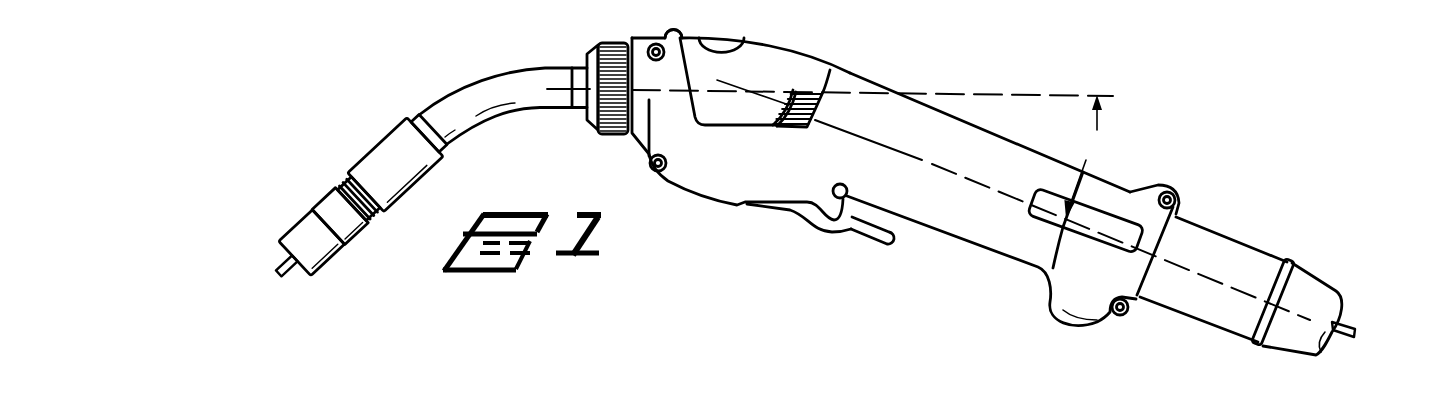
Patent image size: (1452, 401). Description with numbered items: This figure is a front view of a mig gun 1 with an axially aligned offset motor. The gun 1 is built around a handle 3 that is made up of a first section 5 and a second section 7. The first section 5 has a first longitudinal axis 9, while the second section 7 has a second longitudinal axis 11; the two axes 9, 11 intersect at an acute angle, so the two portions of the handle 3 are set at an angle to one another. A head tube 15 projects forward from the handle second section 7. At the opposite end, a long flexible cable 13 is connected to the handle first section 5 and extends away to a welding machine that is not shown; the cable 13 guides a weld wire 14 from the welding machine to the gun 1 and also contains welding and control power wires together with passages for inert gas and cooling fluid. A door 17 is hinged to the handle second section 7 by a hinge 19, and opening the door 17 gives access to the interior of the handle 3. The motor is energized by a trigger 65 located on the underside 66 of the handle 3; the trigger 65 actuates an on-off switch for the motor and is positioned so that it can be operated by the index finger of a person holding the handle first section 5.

The gun 1 is at (907, 40).
The handle 3 is at (865, 60).
The first section 5 is at (967, 133).
The second section 7 is at (642, 57).
The first longitudinal axis 9 is at (1195, 266).
The second longitudinal axis 11 is at (927, 93).
The cable 13 is at (1298, 333).
The weld wire 14 is at (285, 267).
The head tube 15 is at (462, 97).
The door 17 is at (773, 62).
The hinge 19 is at (668, 30).
The trigger 65 is at (858, 233).
The underside 66 is at (955, 235).